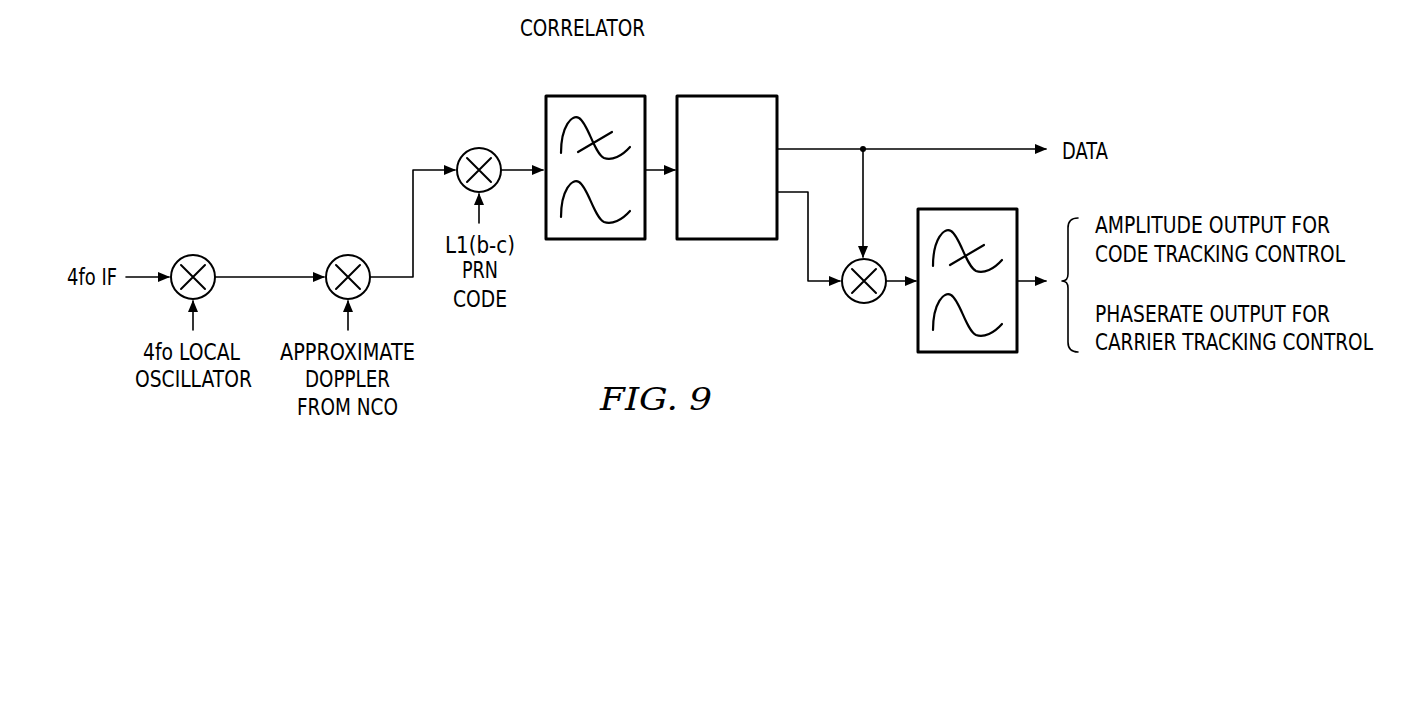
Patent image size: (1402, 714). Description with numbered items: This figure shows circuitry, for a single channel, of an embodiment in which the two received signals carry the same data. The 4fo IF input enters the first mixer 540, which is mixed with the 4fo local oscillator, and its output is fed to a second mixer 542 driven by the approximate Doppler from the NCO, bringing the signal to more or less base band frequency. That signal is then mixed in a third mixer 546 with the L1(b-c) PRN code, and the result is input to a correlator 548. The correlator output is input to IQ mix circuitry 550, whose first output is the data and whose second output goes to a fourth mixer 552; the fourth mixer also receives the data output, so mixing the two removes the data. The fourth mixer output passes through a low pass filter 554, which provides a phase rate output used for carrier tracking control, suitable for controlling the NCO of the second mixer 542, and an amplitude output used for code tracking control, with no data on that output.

The first mixer 540 is at (185, 257).
The second mixer 542 is at (340, 257).
The third mixer 546 is at (471, 150).
The correlator 548 is at (597, 95).
The IQ mix circuitry 550 is at (722, 96).
The fourth mixer 552 is at (852, 300).
The low pass filter 554 is at (968, 353).